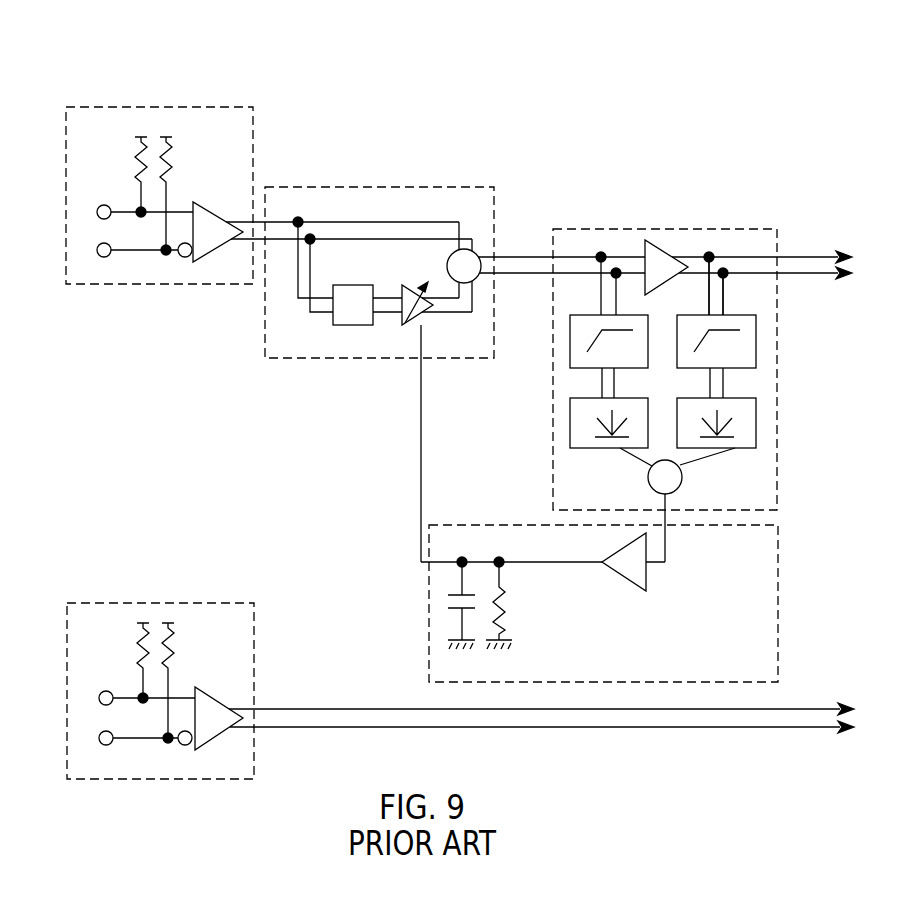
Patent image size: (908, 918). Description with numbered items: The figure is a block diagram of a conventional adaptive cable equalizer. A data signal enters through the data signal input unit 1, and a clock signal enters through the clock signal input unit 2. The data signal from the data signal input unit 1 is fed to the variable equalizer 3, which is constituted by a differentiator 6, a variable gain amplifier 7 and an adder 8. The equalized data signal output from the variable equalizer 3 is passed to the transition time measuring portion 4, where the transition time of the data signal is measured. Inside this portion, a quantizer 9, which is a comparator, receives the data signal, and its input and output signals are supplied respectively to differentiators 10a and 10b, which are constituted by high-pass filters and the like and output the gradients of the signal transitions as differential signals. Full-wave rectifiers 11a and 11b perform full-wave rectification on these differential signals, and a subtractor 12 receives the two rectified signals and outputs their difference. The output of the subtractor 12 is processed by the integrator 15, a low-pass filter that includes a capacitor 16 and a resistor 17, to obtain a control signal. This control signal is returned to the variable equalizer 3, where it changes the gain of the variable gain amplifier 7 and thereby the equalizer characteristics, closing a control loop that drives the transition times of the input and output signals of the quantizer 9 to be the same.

The data signal input unit 1 is at (158, 107).
The clock signal input unit 2 is at (160, 603).
The variable equalizer 3 is at (398, 287).
The transition time measuring portion 4 is at (665, 346).
The differentiator 6 is at (345, 325).
The variable gain amplifier 7 is at (430, 318).
The adder 8 is at (477, 254).
The quantizer 9 is at (665, 245).
The differentiator 10a is at (570, 352).
The differentiator 10b is at (756, 340).
The full-wave rectifier 11a is at (570, 425).
The full-wave rectifier 11b is at (756, 420).
The subtractor 12 is at (682, 477).
The integrator 15 is at (606, 503).
The capacitor 16 is at (447, 600).
The resistor 17 is at (508, 612).